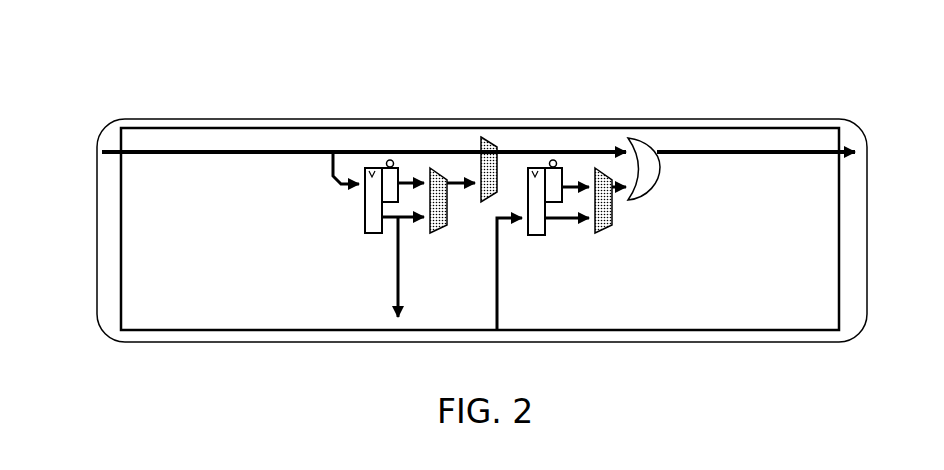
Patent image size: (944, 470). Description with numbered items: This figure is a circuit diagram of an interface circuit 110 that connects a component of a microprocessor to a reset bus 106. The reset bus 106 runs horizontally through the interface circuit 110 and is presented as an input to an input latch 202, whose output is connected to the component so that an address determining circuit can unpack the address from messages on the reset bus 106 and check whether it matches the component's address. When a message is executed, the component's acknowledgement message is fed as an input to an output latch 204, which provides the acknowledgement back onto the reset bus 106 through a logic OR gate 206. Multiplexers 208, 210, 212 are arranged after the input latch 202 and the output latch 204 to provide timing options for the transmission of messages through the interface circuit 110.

The reset bus 106 is at (88, 152).
The interface circuit 110 is at (270, 82).
The input latch 202 is at (365, 215).
The output latch 204 is at (537, 235).
The logic OR gate 206 is at (640, 140).
The multiplexer 208 is at (438, 168).
The multiplexer 210 is at (488, 137).
The multiplexer 212 is at (603, 226).